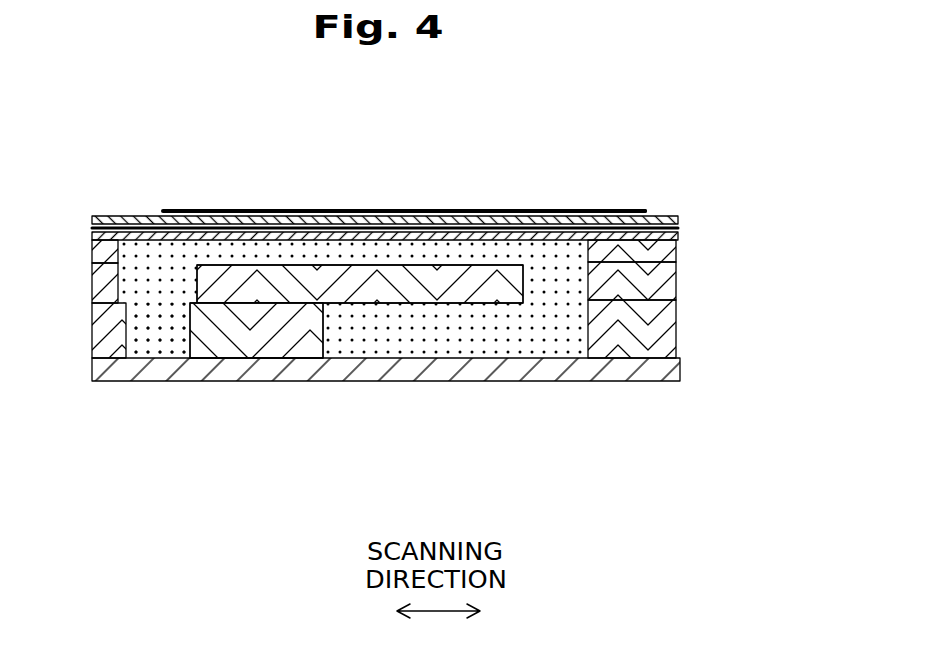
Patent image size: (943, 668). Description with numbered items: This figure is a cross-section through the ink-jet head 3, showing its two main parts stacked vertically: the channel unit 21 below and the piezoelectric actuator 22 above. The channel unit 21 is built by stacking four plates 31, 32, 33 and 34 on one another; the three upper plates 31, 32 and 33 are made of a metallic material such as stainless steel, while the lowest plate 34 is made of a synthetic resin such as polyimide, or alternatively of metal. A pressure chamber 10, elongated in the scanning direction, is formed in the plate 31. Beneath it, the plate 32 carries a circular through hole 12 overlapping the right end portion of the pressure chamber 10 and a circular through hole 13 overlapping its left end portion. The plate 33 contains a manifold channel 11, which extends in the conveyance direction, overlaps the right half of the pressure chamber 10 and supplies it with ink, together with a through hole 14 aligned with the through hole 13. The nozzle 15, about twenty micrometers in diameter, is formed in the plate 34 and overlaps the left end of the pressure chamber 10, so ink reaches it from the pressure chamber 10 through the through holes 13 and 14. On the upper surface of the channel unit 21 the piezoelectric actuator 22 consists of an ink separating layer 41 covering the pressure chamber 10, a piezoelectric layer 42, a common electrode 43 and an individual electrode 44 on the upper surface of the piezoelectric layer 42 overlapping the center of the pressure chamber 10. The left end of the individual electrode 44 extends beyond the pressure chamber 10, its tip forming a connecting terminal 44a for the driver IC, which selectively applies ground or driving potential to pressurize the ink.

The ink-jet head 3 is at (681, 168).
The pressure chamber 10 is at (408, 255).
The manifold channel 11 is at (325, 332).
The through hole 12 is at (523, 284).
The through hole 13 is at (118, 286).
The through hole 14 is at (190, 336).
The nozzle 15 is at (152, 370).
The channel unit 21 is at (88, 248).
The piezoelectric actuator 22 is at (88, 213).
The plate 31 is at (655, 251).
The plate 32 is at (665, 287).
The plate 33 is at (665, 333).
The plate 34 is at (660, 374).
The ink separating layer 41 is at (676, 229).
The piezoelectric layer 42 is at (676, 216).
The common electrode 43 is at (127, 230).
The individual electrode 44 is at (235, 210).
The connecting terminal 44a is at (615, 208).